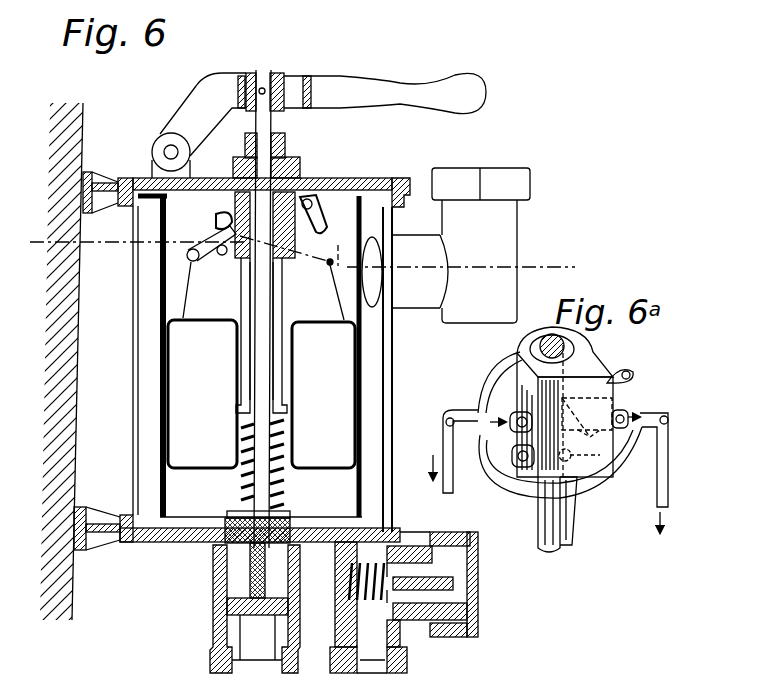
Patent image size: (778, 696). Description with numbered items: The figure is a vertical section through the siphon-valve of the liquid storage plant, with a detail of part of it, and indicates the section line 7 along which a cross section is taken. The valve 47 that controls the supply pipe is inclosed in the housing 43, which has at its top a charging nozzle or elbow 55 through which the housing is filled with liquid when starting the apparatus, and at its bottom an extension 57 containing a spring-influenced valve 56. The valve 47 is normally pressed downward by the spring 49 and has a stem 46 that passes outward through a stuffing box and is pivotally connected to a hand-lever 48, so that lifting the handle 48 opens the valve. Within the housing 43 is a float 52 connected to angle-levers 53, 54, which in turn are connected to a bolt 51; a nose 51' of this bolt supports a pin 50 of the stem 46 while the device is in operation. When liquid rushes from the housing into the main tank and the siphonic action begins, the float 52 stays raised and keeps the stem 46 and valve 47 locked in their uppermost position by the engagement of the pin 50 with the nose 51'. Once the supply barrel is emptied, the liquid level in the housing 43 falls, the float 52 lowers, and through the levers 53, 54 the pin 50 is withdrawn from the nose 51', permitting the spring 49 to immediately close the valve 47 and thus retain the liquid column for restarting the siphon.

In FIG. 6, the section line 7— 7 is at (302, 260).
In FIG. 6, the housing 43 is at (133, 318).
In FIG. 6, the stem 46 is at (262, 312).
In FIG. 6A, the stem 46 is at (545, 346).
In FIG. 6, the valve 47 is at (222, 517).
In FIG. 6, the hand-lever 48 is at (425, 110).
In FIG. 6, the spring 49 is at (284, 478).
In FIG. 6, the pin 50 is at (255, 250).
In FIG. 6A, the pin 50 is at (579, 461).
In FIG. 6, the bolt 51 is at (328, 214).
In FIG. 6A, the bolt 51 is at (591, 442).
In FIG. 6, the nose 51' is at (210, 213).
In FIG. 6A, the nose 51' is at (587, 409).
In FIG. 6, the float 52 is at (350, 405).
In FIG. 6, the angle-lever 53 is at (215, 239).
In FIG. 6A, the angle-lever 53 is at (492, 386).
In FIG. 6, the angle-lever 54 is at (328, 270).
In FIG. 6A, the angle-lever 54 is at (638, 440).
In FIG. 6, the charging nozzle or elbow 55 is at (508, 259).
In FIG. 6, the spring-influenced valve 56 is at (413, 543).
In FIG. 6, the extension 57 is at (407, 622).